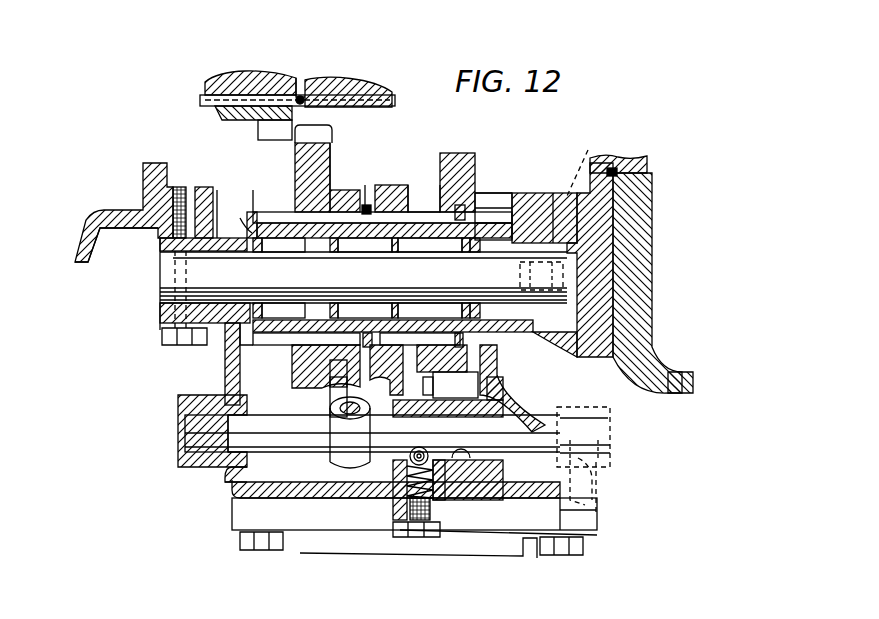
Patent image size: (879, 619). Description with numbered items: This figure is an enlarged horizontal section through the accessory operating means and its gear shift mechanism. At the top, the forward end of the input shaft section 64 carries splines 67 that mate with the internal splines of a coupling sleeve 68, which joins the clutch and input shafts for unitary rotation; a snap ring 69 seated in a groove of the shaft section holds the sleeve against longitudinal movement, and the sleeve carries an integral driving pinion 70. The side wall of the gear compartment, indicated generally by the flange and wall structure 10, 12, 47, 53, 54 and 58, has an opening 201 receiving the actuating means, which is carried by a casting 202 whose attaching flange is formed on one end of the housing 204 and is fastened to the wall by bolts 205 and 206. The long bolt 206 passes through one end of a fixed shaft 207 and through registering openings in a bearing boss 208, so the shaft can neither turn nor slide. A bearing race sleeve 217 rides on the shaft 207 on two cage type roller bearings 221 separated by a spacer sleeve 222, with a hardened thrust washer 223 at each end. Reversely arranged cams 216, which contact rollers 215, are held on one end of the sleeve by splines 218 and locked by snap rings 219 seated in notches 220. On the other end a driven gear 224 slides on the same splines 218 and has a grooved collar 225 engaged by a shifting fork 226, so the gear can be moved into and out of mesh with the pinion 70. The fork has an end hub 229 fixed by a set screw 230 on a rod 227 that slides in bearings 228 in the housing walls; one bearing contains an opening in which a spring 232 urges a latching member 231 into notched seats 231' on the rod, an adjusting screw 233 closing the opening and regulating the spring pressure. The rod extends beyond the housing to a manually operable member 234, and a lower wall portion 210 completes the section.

The mounting flange 10 is at (80, 245).
The housing wall 12 is at (143, 174).
The flange foot 47 is at (693, 383).
The outer housing member 53 is at (640, 326).
The inner housing member 54 is at (597, 297).
The cover cap 58 is at (648, 160).
The input shaft section 64 is at (372, 86).
The splines 67 is at (200, 102).
The coupling sleeve 68 is at (218, 114).
The snap ring 69 is at (302, 96).
The driving pinion 70 is at (266, 128).
The opening 201 is at (510, 197).
The casting 202 is at (508, 354).
The housing 204 is at (223, 357).
The bolt 205 is at (587, 162).
The bolt 206 is at (170, 243).
The shaft 207 is at (207, 268).
The bearing boss 208 is at (158, 311).
The bottom plate 210 is at (343, 548).
The roller 215 is at (520, 412).
The cam 216 is at (407, 187).
The bearing race sleeve 217 is at (362, 248).
The splines 218 is at (263, 217).
The snap ring 219 is at (365, 205).
The notch 220 is at (376, 318).
The roller bearing 221 is at (289, 248).
The sleeve 222 is at (430, 252).
The thrust washer 223 is at (492, 223).
The driven gear 224 is at (318, 168).
The grooved collar 225 is at (330, 356).
The shifting fork 226 is at (330, 382).
The rod 227 is at (237, 430).
The bearing 228 is at (187, 465).
The end hub 229 is at (330, 461).
The set screw 230 is at (330, 417).
The latching member 231 is at (443, 421).
The seat 231' is at (474, 440).
The spring 232 is at (416, 474).
The adjusting screw 233 is at (428, 505).
The manually operable member 234 is at (600, 483).